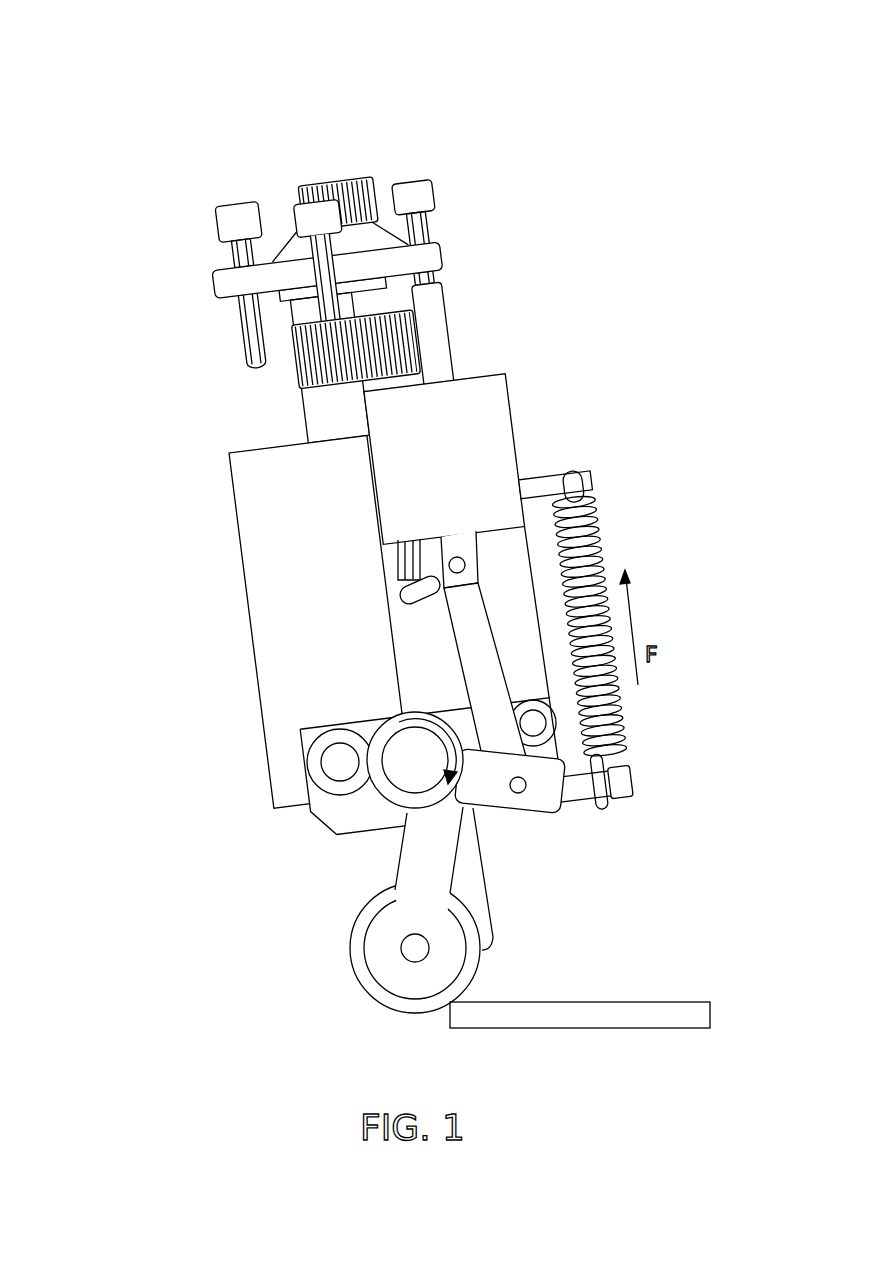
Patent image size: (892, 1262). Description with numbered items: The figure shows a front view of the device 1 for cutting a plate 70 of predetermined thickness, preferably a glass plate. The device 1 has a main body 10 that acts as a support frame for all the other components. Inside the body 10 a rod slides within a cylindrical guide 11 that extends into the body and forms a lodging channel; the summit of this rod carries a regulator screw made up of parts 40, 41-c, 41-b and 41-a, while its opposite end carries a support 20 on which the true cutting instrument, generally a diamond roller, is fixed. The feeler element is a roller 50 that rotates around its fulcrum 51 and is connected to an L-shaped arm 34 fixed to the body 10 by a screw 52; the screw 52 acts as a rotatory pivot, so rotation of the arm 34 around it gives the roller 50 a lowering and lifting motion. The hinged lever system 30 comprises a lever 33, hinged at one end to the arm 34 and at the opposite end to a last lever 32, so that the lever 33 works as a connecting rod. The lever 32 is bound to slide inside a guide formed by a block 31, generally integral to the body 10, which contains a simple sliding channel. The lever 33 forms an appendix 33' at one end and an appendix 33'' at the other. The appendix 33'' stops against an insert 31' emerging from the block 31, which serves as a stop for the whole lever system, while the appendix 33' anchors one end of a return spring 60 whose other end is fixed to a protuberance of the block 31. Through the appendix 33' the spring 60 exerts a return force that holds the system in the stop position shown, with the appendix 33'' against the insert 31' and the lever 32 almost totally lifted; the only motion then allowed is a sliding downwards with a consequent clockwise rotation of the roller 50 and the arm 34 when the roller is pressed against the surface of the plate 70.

The device 1 is at (660, 161).
The main body 10 is at (298, 600).
The cylindrical guide 11 is at (330, 405).
The support 20 is at (472, 910).
The lever assembly 30 is at (524, 374).
The block 31 is at (532, 448).
The insert 31' is at (353, 556).
The lever 32 is at (437, 352).
The lever 33 is at (568, 672).
The appendix 33' is at (655, 779).
The appendix 33'' is at (373, 623).
The L-shaped arm 34 is at (412, 877).
The regulator screw 40 is at (215, 285).
The regulator screw 41-a is at (425, 190).
The regulator screw 41-b is at (338, 178).
The regulator screw 41-c is at (233, 210).
The roller 50 is at (352, 948).
The fulcrum 51 is at (415, 948).
The screw 52 is at (458, 765).
The return spring 60 is at (593, 533).
The plate 70 is at (640, 1002).